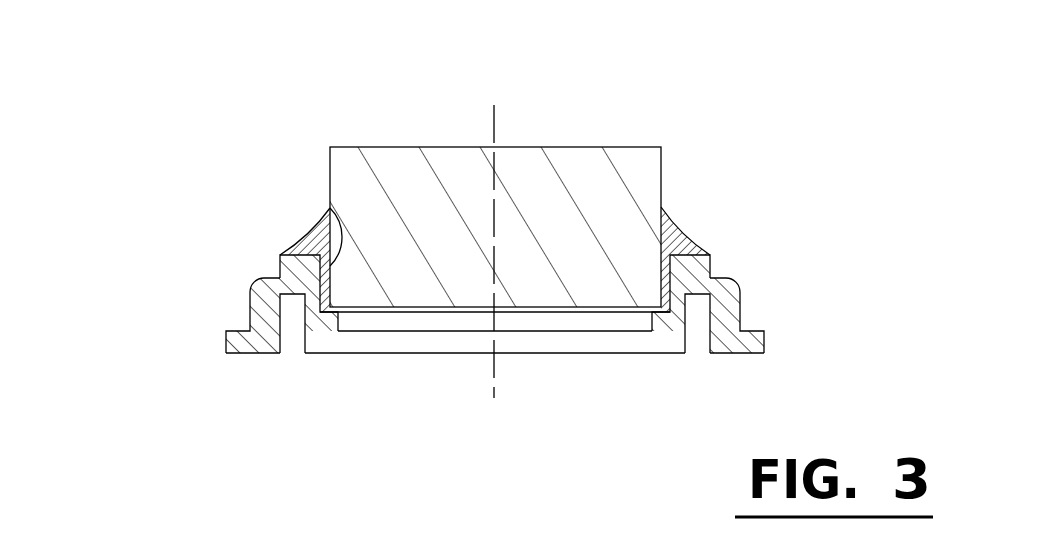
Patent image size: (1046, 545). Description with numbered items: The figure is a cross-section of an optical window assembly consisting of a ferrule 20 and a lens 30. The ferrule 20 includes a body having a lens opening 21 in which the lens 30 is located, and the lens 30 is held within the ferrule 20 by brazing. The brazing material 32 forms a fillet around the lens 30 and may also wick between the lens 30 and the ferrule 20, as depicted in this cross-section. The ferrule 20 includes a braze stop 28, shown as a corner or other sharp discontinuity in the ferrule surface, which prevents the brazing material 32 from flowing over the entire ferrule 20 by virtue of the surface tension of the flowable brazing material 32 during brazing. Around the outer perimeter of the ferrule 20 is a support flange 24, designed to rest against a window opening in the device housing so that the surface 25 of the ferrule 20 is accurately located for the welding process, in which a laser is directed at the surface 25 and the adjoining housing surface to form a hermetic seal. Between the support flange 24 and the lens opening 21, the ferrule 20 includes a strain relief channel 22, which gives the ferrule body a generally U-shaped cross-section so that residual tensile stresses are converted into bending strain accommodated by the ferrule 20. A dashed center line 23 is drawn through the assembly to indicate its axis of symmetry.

The ferrule 20 is at (250, 290).
The lens opening 21 is at (328, 208).
The strain relief channel 22 is at (292, 320).
The center axis 23 is at (494, 378).
The support flange 24 is at (235, 328).
The surface 25 is at (240, 353).
The braze stop 28 is at (710, 256).
The lens 30 is at (395, 160).
The brazing material 32 is at (296, 239).